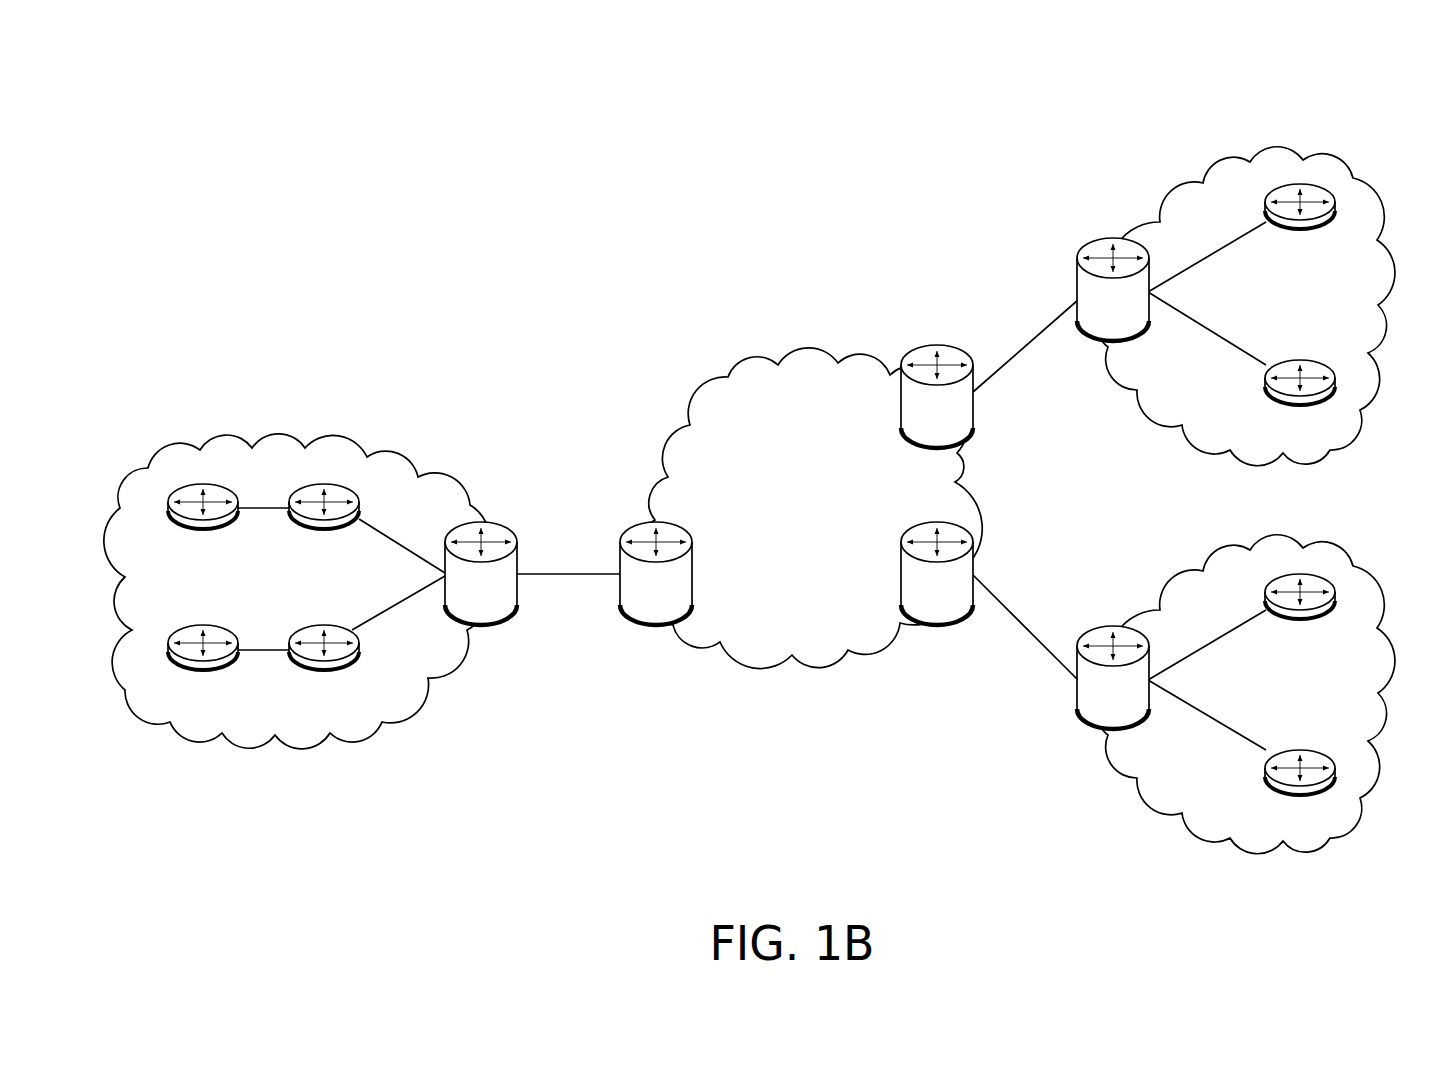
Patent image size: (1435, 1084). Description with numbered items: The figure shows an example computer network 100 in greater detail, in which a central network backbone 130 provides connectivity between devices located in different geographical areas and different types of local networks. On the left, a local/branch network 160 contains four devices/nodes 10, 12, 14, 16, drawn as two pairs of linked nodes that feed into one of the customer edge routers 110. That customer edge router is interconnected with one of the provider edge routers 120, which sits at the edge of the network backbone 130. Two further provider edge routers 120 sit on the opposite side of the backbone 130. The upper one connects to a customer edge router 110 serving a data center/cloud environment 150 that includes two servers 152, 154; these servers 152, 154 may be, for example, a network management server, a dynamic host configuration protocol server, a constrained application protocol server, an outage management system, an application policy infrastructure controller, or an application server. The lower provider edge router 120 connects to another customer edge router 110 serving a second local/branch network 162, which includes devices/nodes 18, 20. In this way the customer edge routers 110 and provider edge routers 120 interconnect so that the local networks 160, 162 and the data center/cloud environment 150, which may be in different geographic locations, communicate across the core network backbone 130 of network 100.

The computer network 100 is at (1340, 92).
The device/node 10 is at (203, 525).
The device/node 12 is at (324, 525).
The device/node 14 is at (203, 666).
The device/node 16 is at (324, 666).
The device/node 18 is at (1300, 790).
The device/node 20 is at (1300, 614).
The customer edge (CE) router 110 is at (464, 611).
The provider edge (PE) router 120 is at (639, 611).
The network backbone 130 is at (783, 530).
The data center/cloud environment 150 is at (1208, 171).
The server 152 is at (1300, 225).
The server 154 is at (1300, 401).
The local/branch network 160 is at (340, 431).
The local/branch network 162 is at (1130, 778).